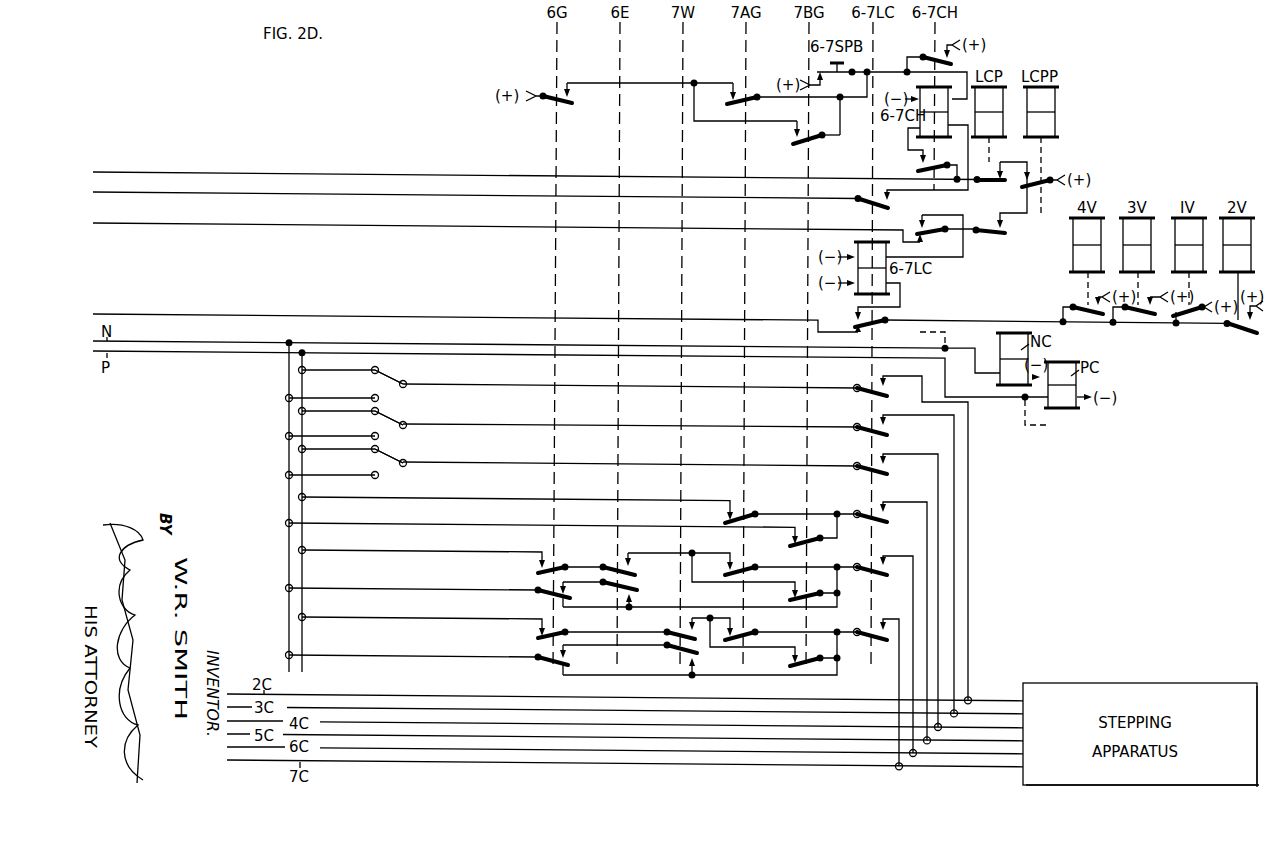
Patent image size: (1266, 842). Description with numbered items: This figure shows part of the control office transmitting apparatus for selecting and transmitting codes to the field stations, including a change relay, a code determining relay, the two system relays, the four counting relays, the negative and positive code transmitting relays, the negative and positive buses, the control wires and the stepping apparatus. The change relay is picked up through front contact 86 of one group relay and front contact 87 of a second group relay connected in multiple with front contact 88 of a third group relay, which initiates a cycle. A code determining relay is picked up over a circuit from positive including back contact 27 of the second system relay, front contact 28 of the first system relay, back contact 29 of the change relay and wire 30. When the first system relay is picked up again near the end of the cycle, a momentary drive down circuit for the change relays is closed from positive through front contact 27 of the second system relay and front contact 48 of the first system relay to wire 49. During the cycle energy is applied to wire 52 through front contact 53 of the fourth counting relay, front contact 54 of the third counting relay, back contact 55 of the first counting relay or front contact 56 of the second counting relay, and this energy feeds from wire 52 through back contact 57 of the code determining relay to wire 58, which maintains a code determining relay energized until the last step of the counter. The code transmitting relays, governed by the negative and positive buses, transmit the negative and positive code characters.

The front contact of relay 6G 86 is at (563, 103).
The front contact of relay 7BG 87 is at (804, 142).
The front contact of relay 7AG 88 is at (753, 107).
The wire 49 is at (113, 172).
The wire 30 is at (113, 223).
The wire 58 is at (112, 314).
The front contact of relay LCP 48 is at (996, 182).
The contact of relay LCPP 27 is at (1038, 187).
The front contact of relay LCP 28 is at (989, 242).
The back contact of relay 6-7CH 29 is at (933, 235).
The wire 52 is at (1010, 322).
The front contact of relay 4V 53 is at (1076, 300).
The front contact of relay 3V 54 is at (1139, 322).
The back contact of relay 1V 55 is at (1189, 326).
The front contact of relay 2V 56 is at (1242, 324).
The back contact of relay 6-7LC 57 is at (876, 330).